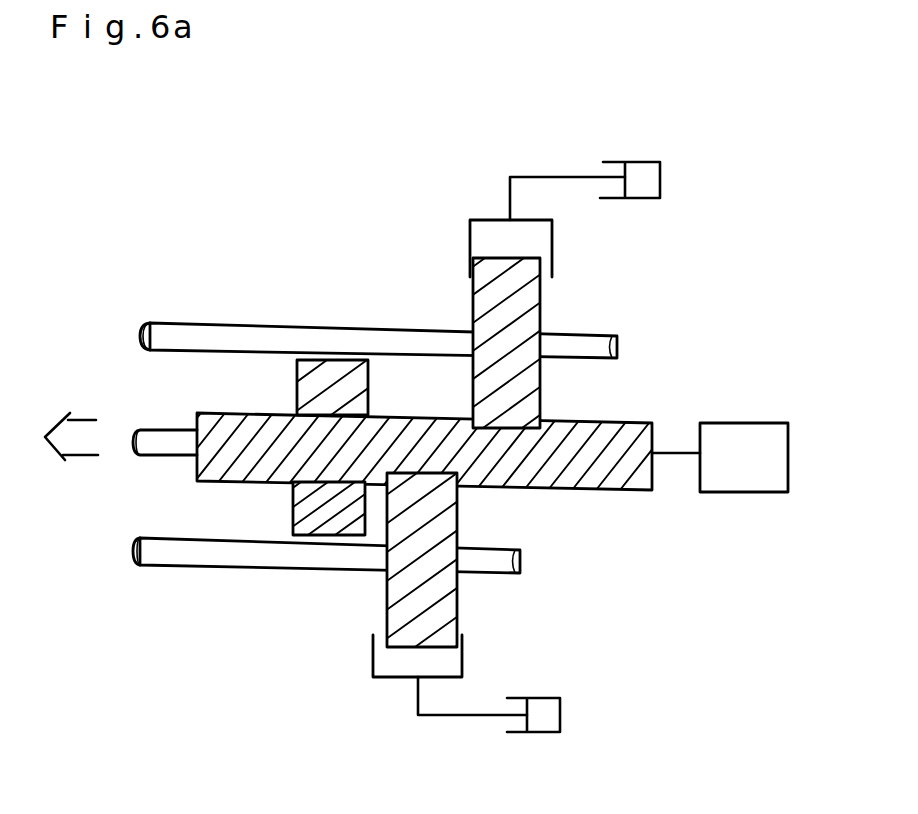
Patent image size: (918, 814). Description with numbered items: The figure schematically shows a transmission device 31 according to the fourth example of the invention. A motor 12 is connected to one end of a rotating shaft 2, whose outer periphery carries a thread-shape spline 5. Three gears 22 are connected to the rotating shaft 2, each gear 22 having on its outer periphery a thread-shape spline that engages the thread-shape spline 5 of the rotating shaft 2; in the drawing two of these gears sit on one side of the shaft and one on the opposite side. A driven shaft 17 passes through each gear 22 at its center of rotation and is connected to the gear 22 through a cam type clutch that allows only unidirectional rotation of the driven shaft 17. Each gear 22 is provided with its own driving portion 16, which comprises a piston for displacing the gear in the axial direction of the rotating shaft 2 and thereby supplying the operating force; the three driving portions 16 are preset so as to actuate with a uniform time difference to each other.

The transmission device 31 is at (423, 142).
The driving portion 16 is at (547, 175).
The driven shaft 17 is at (248, 333).
The gear 22 is at (307, 503).
The rotating shaft 2 is at (620, 418).
The motor 12 is at (768, 423).
The thread-shape spline 5 is at (398, 441).